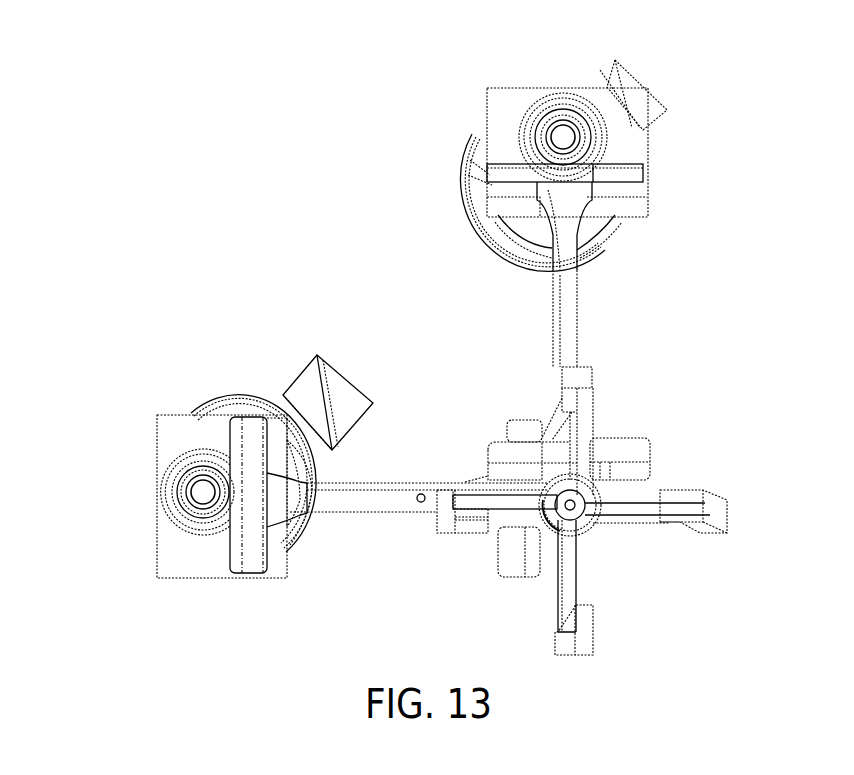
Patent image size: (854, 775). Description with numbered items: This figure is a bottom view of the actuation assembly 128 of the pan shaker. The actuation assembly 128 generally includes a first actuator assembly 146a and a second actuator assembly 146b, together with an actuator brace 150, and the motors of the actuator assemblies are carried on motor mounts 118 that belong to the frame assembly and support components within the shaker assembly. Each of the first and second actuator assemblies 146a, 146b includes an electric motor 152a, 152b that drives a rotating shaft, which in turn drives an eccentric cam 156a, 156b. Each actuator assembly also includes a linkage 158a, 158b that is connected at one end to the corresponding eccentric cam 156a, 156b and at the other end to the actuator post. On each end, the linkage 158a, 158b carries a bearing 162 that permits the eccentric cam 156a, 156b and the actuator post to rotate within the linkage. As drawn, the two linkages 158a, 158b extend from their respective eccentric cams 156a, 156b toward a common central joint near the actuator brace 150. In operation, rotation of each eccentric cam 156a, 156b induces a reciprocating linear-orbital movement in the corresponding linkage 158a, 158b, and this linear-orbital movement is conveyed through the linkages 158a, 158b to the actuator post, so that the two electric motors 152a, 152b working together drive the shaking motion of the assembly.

The actuation assembly 128 is at (425, 344).
The motor mounts 118 is at (438, 330).
The first actuator assembly 146a is at (547, 147).
The second actuator assembly 146b is at (201, 455).
The actuator brace 150 is at (626, 522).
The electric motor 152a is at (448, 182).
The electric motor 152b is at (262, 418).
The eccentric cam 156a is at (675, 96).
The eccentric cam 156b is at (132, 476).
The linkage 158a is at (639, 382).
The linkage 158b is at (419, 574).
The bearing 162 is at (317, 286).